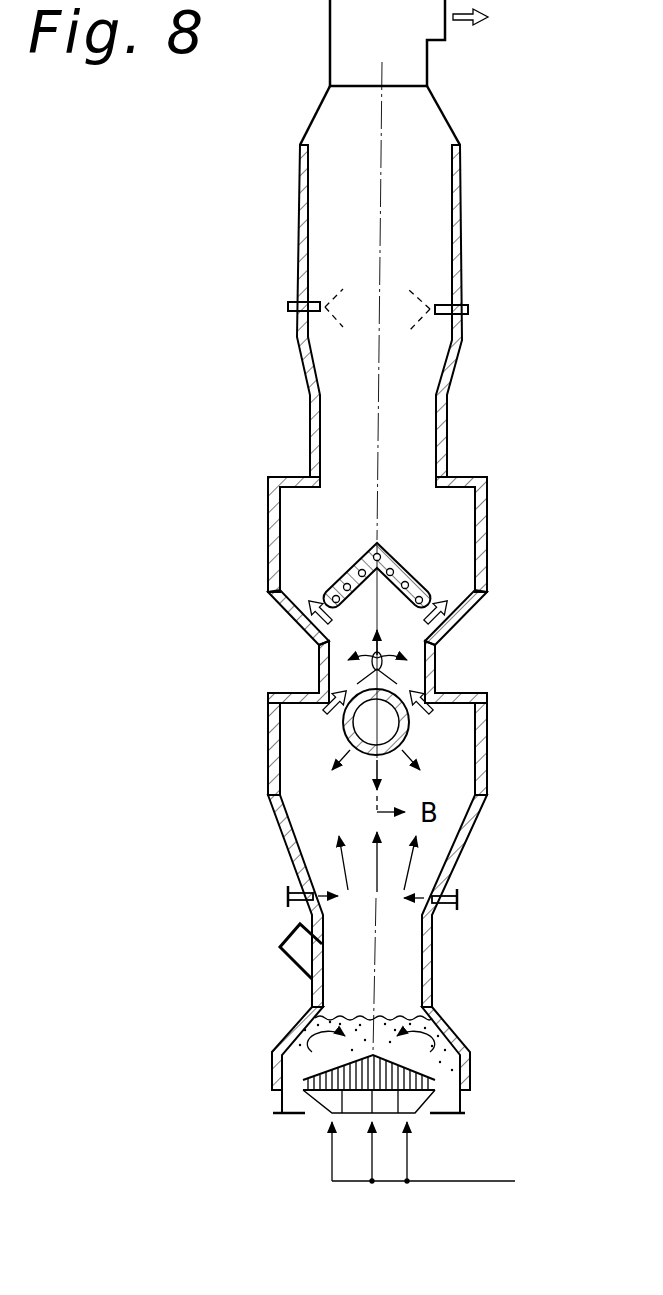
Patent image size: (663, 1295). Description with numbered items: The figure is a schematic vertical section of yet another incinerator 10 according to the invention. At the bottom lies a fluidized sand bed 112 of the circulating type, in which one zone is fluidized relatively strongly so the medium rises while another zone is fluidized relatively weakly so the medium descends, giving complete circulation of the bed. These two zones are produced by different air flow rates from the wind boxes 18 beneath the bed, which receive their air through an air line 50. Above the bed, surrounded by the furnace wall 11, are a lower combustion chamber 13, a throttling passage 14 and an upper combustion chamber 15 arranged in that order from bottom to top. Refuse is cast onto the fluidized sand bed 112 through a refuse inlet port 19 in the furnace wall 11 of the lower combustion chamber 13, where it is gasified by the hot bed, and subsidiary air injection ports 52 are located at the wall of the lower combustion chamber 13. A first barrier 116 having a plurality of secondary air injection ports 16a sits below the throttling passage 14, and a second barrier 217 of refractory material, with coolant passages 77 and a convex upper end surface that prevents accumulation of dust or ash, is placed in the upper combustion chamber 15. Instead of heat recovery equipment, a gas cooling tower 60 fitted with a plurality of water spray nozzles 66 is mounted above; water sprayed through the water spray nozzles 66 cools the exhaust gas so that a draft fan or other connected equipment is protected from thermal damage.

The gas cooling tower 60 is at (433, 238).
The water spray nozzles 66 is at (410, 302).
The upper combustion chamber 15 is at (411, 534).
The second barrier 217 is at (452, 569).
The coolant passages 77 is at (340, 610).
The throttling passage 14 is at (393, 674).
The incinerator 10 is at (323, 749).
The first barrier 116 is at (455, 722).
The secondary air injection ports 16a is at (449, 775).
The lower combustion chamber 13 is at (263, 901).
The furnace wall 11 is at (478, 901).
The subsidiary air injection ports 52 is at (414, 905).
The refuse inlet port 19 is at (265, 951).
The fluidized sand bed 112 is at (415, 1060).
The wind boxes 18 is at (340, 1104).
The air line 50 is at (449, 1184).